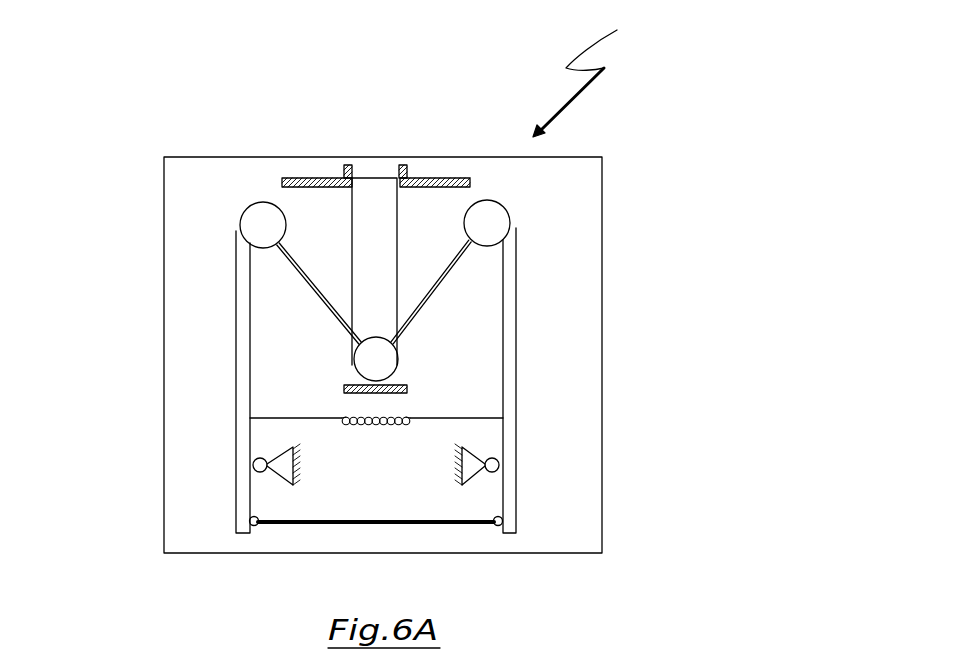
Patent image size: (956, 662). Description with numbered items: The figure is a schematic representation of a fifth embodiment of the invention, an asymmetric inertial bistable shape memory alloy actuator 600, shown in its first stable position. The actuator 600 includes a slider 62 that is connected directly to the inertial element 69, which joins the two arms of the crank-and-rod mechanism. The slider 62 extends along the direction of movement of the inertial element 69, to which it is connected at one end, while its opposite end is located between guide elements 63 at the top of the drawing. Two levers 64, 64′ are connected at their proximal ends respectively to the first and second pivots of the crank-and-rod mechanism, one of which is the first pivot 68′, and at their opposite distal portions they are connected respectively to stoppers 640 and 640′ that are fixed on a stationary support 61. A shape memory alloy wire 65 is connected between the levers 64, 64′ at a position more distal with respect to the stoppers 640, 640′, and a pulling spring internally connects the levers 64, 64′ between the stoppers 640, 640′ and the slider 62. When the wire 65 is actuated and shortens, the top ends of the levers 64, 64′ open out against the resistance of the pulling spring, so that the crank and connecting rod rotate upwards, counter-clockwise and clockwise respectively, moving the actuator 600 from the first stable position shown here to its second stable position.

The inertial bistable actuator 600 is at (606, 69).
The stationary support 61 is at (185, 415).
The slider 62 is at (365, 255).
The guide elements 63 is at (413, 178).
The lever 64 is at (242, 360).
The lever 64′ is at (511, 385).
The shape memory alloy wire 65 is at (289, 523).
The first pivot 68′ is at (257, 227).
The inertial element 69 is at (365, 355).
The stopper 640 is at (260, 466).
The stopper 640′ is at (494, 463).